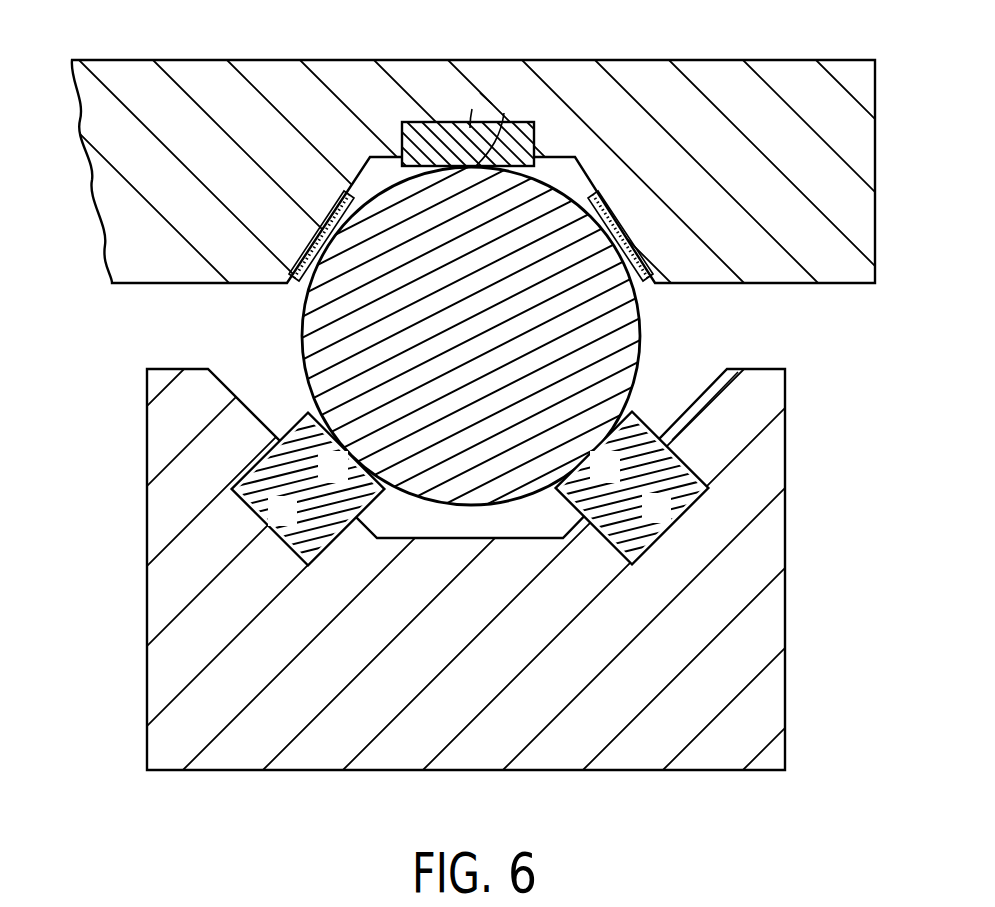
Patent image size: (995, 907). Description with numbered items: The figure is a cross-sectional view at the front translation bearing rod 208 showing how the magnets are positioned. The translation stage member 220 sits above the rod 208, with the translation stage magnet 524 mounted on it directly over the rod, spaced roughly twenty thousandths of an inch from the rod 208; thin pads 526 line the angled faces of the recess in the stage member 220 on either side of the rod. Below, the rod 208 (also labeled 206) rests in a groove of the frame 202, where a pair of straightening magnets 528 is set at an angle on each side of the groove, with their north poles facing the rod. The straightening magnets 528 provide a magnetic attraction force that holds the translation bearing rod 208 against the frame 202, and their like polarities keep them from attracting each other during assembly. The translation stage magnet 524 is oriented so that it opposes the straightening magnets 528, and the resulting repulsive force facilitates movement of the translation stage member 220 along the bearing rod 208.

The translation stage member 220 is at (742, 87).
The translation stage magnet 524 is at (436, 132).
The spacer pads 526 is at (307, 248).
The front translation bearing rod 208 is at (570, 339).
The rolling element 206 is at (630, 328).
The frame 202 is at (752, 648).
The straightening magnets 528 is at (253, 498).